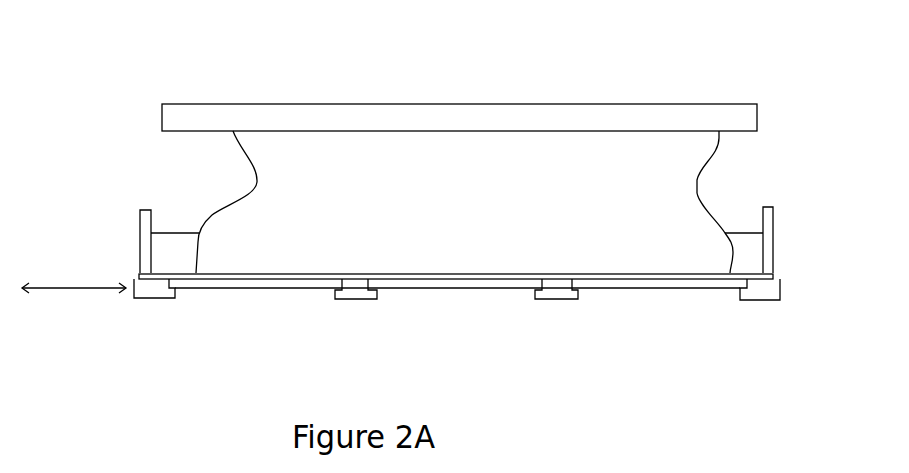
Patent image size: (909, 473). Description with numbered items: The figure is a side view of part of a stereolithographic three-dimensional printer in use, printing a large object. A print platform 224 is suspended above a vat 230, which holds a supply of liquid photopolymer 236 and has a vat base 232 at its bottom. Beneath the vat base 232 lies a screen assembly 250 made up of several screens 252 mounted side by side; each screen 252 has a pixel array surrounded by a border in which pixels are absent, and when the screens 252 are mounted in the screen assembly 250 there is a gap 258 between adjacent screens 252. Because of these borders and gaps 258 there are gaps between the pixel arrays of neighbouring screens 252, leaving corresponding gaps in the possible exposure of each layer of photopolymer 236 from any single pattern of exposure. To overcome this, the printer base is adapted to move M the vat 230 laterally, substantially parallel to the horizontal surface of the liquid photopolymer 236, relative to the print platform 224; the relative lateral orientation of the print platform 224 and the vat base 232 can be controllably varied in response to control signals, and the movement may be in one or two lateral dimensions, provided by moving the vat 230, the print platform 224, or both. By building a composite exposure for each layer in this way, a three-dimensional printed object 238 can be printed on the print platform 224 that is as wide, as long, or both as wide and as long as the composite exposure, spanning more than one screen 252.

The print platform 224 is at (273, 112).
The vat base 232 is at (438, 275).
The 3D printed object 238 is at (540, 171).
The vat 230 is at (768, 207).
The liquid photopolymer 236 is at (747, 258).
The screen 252 is at (417, 284).
The gap 258 is at (555, 299).
The screen assembly 250 is at (718, 330).
The lateral movement M is at (68, 288).